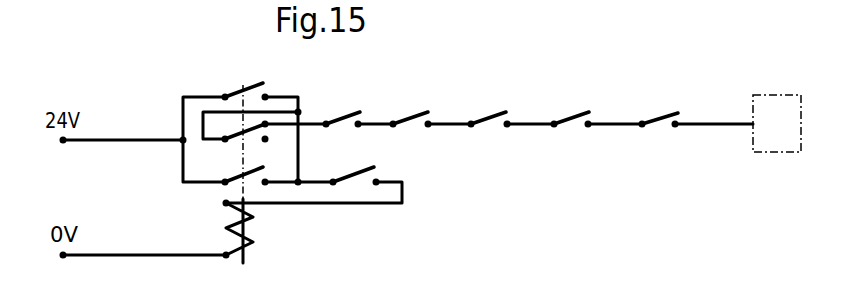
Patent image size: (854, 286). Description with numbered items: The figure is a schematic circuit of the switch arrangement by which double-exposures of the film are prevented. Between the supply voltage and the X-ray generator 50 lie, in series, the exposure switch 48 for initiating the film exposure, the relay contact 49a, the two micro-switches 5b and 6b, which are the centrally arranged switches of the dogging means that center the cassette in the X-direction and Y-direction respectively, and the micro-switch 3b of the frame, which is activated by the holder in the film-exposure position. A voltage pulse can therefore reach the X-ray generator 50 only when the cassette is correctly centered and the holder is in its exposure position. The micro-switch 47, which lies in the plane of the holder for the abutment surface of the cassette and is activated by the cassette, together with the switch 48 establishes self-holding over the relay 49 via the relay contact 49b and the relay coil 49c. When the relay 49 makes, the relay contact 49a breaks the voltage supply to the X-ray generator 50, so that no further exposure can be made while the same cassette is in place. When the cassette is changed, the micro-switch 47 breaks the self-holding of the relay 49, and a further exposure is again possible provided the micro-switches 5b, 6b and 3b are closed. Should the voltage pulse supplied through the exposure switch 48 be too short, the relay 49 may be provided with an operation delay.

The switch for initiating film-exposure 48 is at (243, 93).
The relay 49 is at (267, 227).
The relay contact 49a is at (233, 135).
The relay contact 49b is at (242, 172).
The relay coil 49c is at (232, 223).
The micro-switch 47 is at (353, 173).
The micro-switch 5b is at (407, 115).
The micro-switch 6b is at (573, 115).
The micro-switch 3b is at (657, 117).
The X-ray generator 50 is at (766, 104).